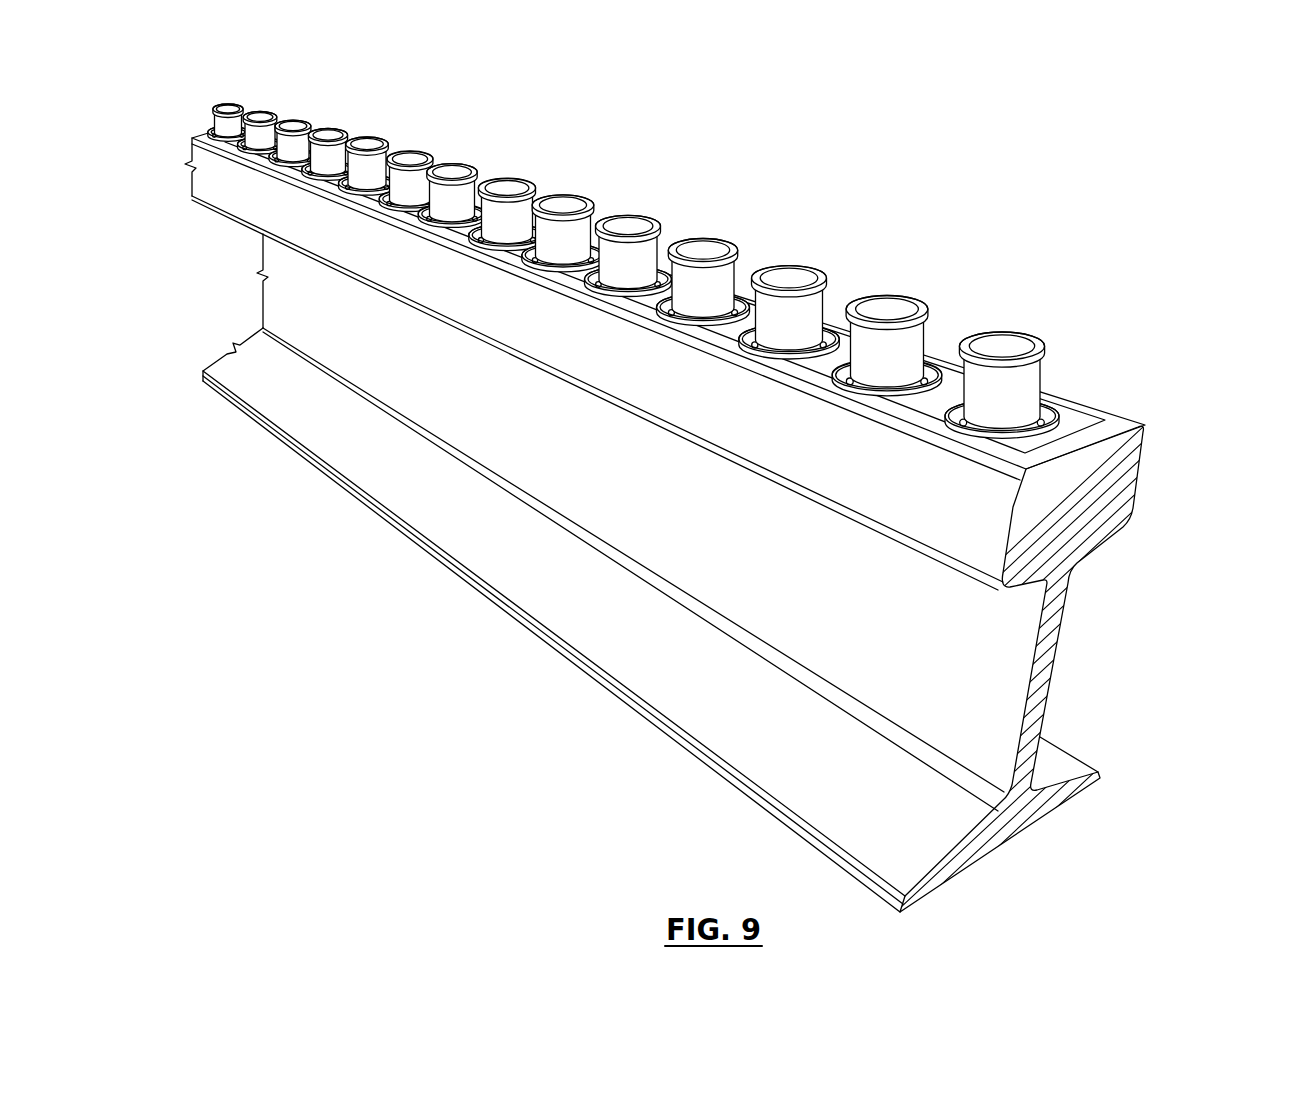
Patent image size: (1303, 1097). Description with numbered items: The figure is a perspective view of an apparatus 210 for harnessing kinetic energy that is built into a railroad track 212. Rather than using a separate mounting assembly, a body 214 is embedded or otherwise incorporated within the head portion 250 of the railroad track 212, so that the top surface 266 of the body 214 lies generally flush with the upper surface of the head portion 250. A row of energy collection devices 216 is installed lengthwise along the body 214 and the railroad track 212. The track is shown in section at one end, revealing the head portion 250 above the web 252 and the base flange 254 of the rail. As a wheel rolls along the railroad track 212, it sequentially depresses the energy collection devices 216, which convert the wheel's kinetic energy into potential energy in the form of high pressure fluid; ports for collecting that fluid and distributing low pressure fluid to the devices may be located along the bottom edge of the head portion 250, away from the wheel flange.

The apparatus for harnessing kinetic energy 210 is at (736, 533).
The railroad track 212 is at (736, 559).
The body 214 is at (639, 271).
The energy collection devices 216 is at (792, 253).
The head portion 250 is at (706, 360).
The web 252 is at (1043, 662).
The bottom flange 254 is at (1022, 822).
The top surface 266 is at (1071, 418).